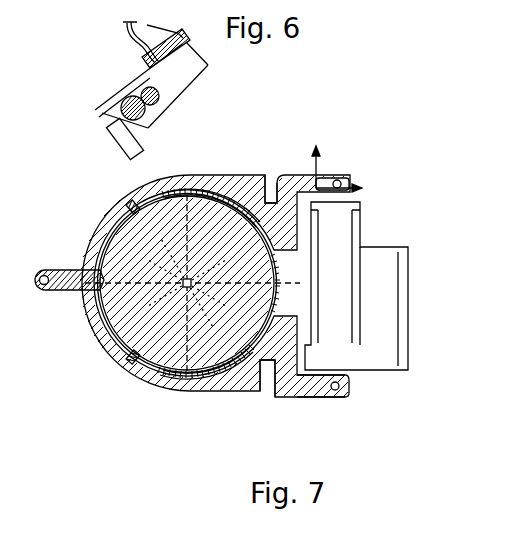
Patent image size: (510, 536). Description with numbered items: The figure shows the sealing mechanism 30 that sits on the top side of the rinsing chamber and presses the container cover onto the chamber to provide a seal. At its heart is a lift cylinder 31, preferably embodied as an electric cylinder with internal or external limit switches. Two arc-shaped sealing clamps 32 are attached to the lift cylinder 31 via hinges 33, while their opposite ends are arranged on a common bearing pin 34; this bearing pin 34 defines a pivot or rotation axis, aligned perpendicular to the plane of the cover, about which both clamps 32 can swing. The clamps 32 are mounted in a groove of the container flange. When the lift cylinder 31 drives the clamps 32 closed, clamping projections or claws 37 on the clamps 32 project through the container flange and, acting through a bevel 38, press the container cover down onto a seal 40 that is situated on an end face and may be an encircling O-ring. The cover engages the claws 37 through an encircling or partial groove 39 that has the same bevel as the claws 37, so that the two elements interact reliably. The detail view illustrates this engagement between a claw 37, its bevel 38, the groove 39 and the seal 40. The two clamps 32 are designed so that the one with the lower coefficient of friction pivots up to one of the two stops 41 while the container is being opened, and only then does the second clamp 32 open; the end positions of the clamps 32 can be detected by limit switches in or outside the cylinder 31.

In FIG. 7, the sealing mechanism 30 is at (180, 408).
In FIG. 7, the lift cylinder 31 is at (380, 323).
In FIG. 7, the sealing clamp 32 is at (218, 178).
In FIG. 7, the hinge 33 is at (338, 178).
In FIG. 6, the bearing pin 34 is at (102, 126).
In FIG. 7, the bearing pin 34 is at (43, 273).
In FIG. 7, the claw 37 is at (136, 380).
In FIG. 6, the bevel 38 is at (141, 118).
In FIG. 6, the groove 39 is at (127, 76).
In FIG. 6, the seal 40 is at (158, 90).
In FIG. 7, the stop 41 is at (271, 176).